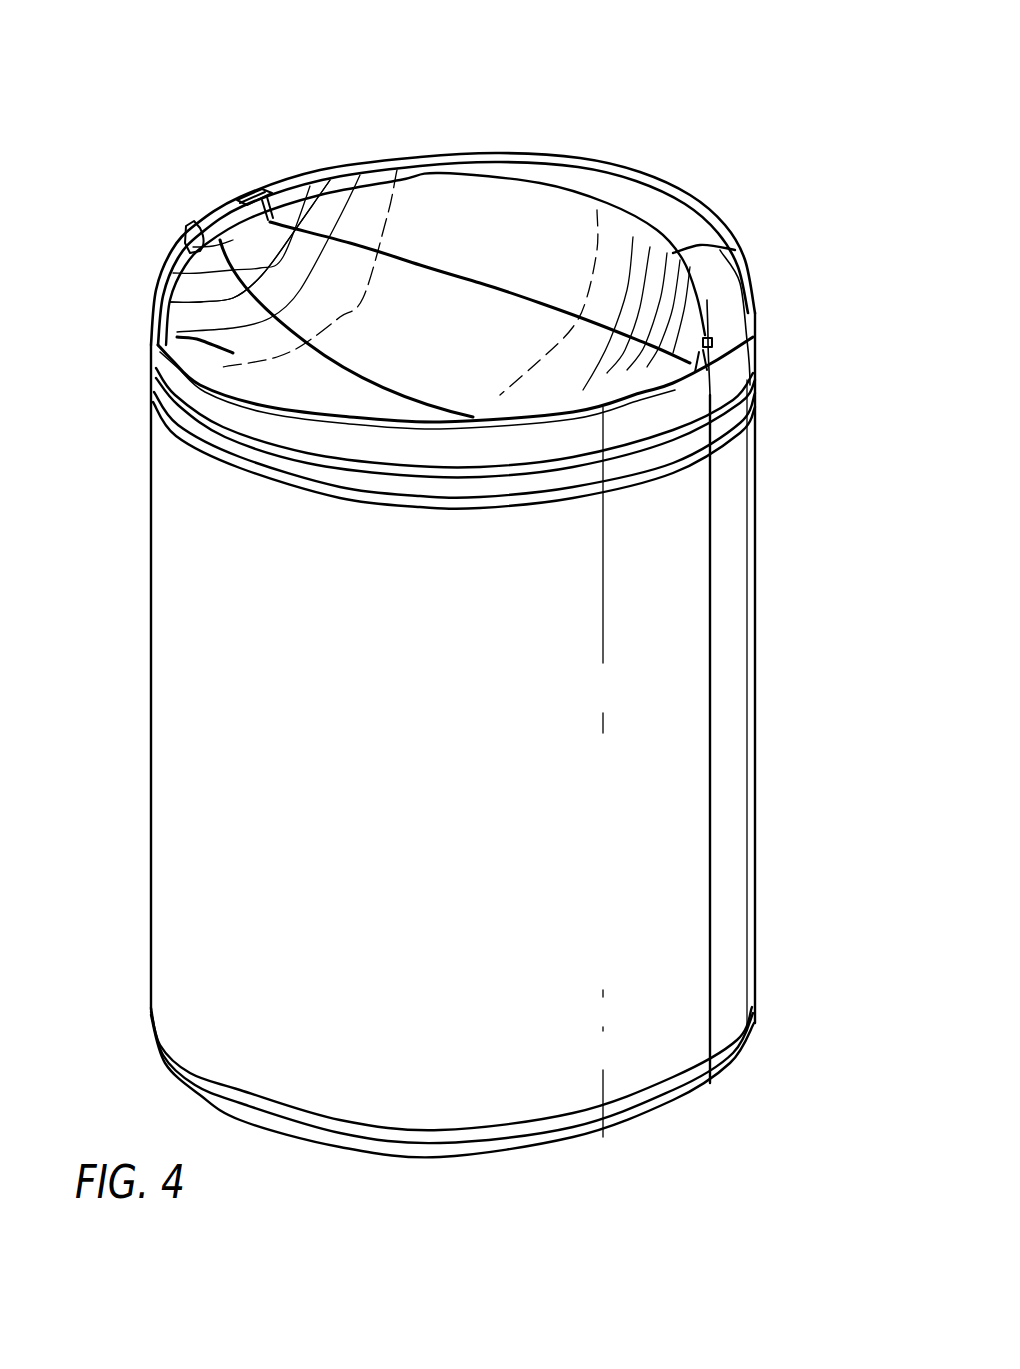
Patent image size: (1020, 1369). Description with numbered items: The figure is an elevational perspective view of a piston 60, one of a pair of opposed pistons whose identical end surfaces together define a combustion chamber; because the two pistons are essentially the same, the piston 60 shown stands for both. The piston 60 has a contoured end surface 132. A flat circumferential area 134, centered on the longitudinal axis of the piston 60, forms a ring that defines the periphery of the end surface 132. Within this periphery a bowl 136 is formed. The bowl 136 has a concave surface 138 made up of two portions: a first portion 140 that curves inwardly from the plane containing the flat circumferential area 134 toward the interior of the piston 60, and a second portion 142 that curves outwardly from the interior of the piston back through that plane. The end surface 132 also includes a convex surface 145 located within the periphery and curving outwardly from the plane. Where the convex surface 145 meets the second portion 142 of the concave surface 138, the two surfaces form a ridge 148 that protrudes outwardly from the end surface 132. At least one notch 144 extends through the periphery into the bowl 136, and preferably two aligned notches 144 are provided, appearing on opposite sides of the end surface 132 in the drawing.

The piston 60 is at (783, 608).
The end surface 132 is at (463, 256).
The flat circumferential area 134 is at (677, 207).
The bowl 136 is at (183, 262).
The concave surface 138 is at (180, 290).
The first portion 140 is at (233, 355).
The second portion 142 is at (333, 200).
The notch 144 is at (217, 223).
The convex surface 145 is at (588, 192).
The ridge 148 is at (735, 250).